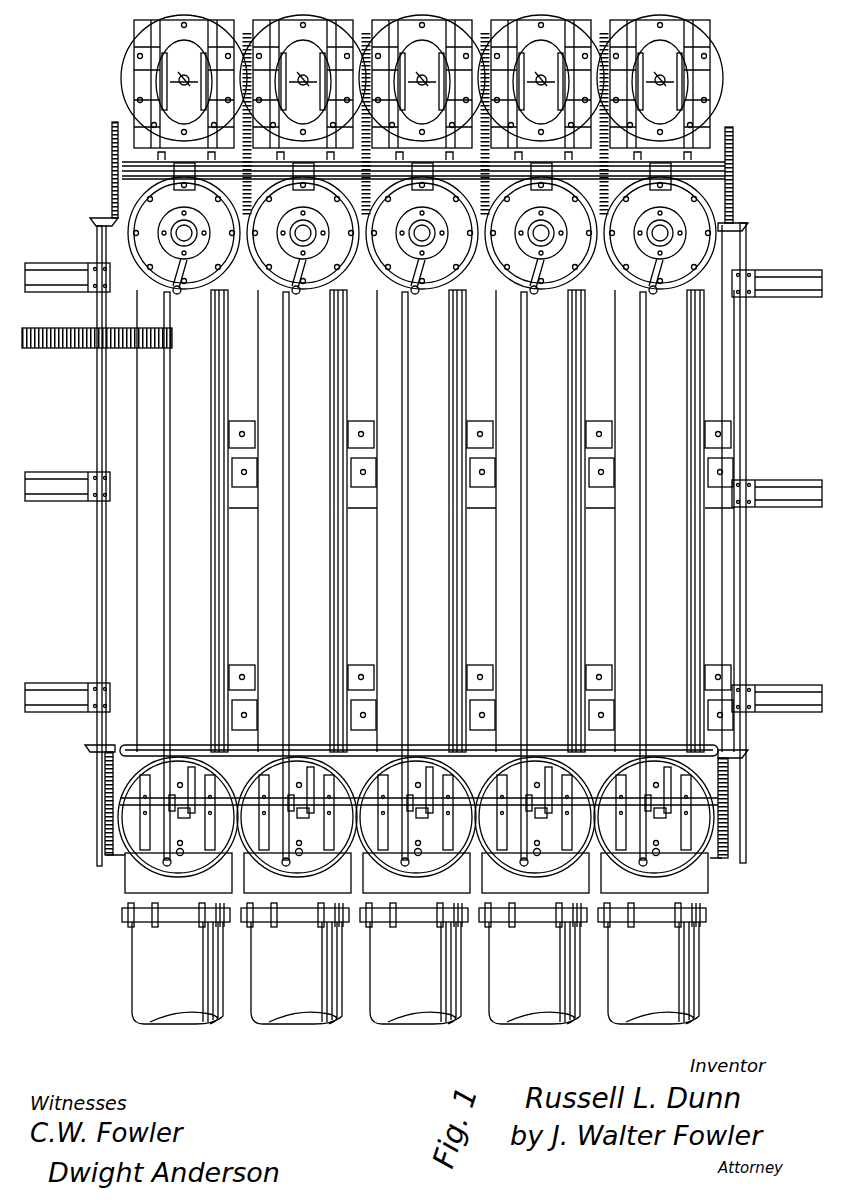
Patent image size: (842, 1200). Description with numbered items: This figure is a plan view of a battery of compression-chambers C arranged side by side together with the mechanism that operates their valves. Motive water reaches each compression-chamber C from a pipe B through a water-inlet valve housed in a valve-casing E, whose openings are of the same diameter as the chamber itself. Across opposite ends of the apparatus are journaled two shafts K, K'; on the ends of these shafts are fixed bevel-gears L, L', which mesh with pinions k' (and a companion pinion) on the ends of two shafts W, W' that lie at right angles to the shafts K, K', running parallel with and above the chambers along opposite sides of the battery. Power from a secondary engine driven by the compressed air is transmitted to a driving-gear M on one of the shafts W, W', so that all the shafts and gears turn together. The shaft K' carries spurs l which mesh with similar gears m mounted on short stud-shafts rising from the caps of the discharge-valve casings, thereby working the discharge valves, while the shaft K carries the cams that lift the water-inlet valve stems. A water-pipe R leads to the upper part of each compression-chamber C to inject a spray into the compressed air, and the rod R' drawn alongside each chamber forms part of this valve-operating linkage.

The spur gear m is at (222, 107).
The shaft K' is at (390, 125).
The spur l is at (273, 195).
The compression-chamber C is at (458, 521).
The connecting rod R' is at (356, 579).
The water-pipe R is at (652, 579).
The bevel-gear L' is at (422, 172).
The pinion k' is at (414, 215).
The shaft W is at (67, 546).
The shaft W' is at (777, 543).
The driving-gear M is at (62, 348).
The shaft K is at (418, 797).
The bevel-gear L is at (417, 802).
The valve-casing E is at (134, 880).
The pipe B is at (414, 963).